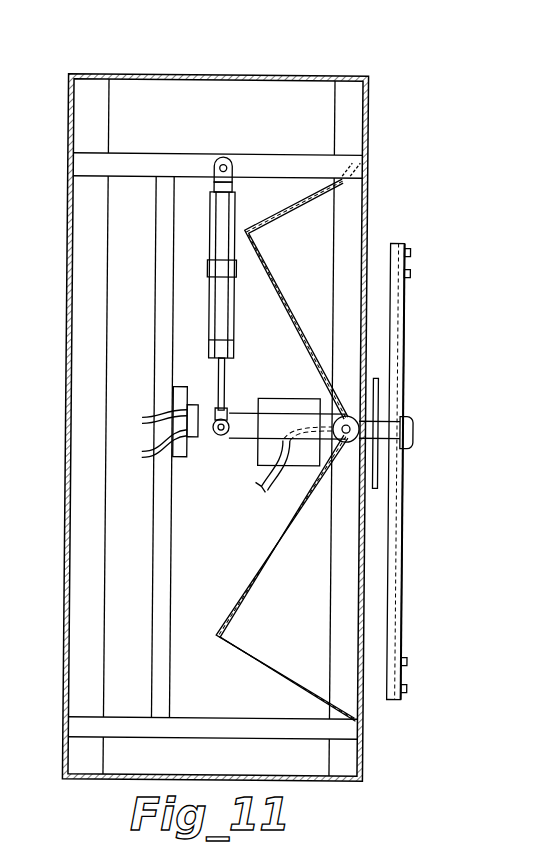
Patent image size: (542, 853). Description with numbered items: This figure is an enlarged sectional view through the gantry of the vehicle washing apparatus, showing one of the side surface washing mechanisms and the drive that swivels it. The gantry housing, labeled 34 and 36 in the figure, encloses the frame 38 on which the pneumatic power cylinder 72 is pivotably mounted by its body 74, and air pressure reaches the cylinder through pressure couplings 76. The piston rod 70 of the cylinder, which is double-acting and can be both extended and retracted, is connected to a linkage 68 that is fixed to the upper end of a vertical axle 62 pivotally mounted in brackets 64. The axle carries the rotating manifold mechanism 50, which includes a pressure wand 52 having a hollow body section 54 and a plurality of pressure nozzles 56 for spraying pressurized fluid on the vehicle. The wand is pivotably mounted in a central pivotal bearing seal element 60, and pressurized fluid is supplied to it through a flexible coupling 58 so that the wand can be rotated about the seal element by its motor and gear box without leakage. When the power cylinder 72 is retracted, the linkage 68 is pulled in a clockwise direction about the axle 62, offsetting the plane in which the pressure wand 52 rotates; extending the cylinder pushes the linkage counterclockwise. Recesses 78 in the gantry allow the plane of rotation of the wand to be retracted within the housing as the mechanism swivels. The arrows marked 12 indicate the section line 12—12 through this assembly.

The section line 12- 12 is at (155, 425).
The housing frame 34 is at (176, 74).
The side wall 36 is at (276, 77).
The frame 38 is at (90, 162).
The rotating manifold mechanism 50 is at (257, 450).
The pressure wand 52 is at (399, 554).
The hollow body section 54 is at (393, 606).
The pressure nozzles 56 is at (408, 690).
The flexible coupling 58 is at (275, 494).
The central pivotal bearing seal element 60 is at (405, 443).
The vertical axle 62 is at (349, 414).
The brackets 64 is at (379, 396).
The linkage 68 is at (247, 418).
The piston rod 70 is at (216, 398).
The pneumatic power cylinder 72 is at (208, 232).
The body 74 is at (207, 290).
The pressure couplings 76 is at (254, 193).
The recesses 78 is at (295, 652).